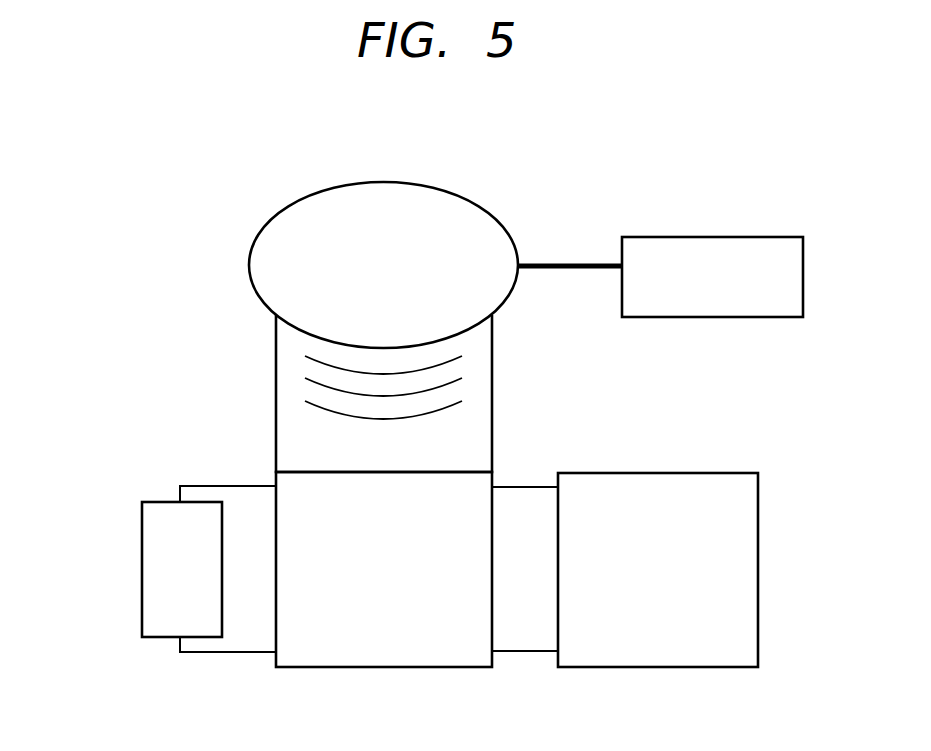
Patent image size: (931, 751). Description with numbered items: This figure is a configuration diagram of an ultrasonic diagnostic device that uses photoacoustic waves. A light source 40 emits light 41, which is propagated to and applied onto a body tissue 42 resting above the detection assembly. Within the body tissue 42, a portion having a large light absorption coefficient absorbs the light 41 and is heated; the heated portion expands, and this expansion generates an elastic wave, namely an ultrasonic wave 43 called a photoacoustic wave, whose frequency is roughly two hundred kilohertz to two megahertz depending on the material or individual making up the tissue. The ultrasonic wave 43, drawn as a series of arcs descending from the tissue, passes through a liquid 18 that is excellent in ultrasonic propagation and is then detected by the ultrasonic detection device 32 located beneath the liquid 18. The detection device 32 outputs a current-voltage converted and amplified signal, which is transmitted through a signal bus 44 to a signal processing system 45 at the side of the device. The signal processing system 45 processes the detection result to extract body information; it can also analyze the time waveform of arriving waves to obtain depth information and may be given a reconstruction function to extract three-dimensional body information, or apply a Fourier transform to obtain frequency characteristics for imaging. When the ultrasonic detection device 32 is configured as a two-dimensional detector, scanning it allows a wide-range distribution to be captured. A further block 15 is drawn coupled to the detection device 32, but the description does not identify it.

The display unit 15 is at (157, 568).
The liquid 18 is at (478, 430).
The ultrasonic detection device 32 is at (380, 652).
The light source 40 is at (715, 252).
The light 41 is at (568, 262).
The body tissue 42 is at (275, 237).
The ultrasonic wave 43 is at (266, 342).
The signal bus 44 is at (523, 633).
The signal processing system 45 is at (653, 652).